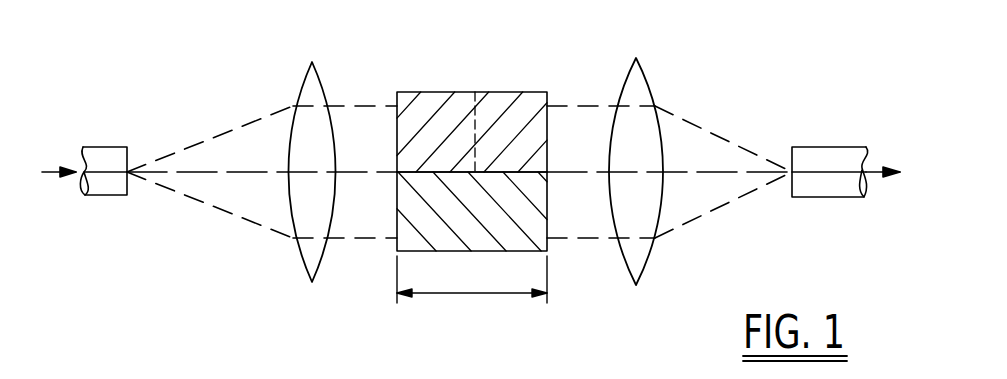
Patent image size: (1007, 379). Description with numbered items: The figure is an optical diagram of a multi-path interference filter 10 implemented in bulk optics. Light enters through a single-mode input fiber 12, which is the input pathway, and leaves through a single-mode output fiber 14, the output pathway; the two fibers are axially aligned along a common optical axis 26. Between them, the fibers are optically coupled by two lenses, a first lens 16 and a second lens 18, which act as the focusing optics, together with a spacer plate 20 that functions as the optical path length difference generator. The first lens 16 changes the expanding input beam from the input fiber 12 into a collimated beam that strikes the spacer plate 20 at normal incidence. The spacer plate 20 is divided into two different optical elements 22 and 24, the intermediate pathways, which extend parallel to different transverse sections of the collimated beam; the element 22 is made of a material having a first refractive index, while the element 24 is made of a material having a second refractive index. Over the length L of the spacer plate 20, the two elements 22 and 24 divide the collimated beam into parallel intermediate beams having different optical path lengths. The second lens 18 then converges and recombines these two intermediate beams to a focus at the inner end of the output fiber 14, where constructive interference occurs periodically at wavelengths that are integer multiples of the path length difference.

The multi-path filter 10 is at (334, 53).
The input fiber 12 is at (113, 147).
The output fiber 14 is at (831, 147).
The first lens 16 is at (296, 258).
The second lens 18 is at (648, 263).
The spacer plate 20 is at (470, 140).
The first optical element 22 is at (543, 130).
The second optical element 24 is at (407, 205).
The common optical axis 26 is at (378, 172).
The crystal length L is at (480, 297).